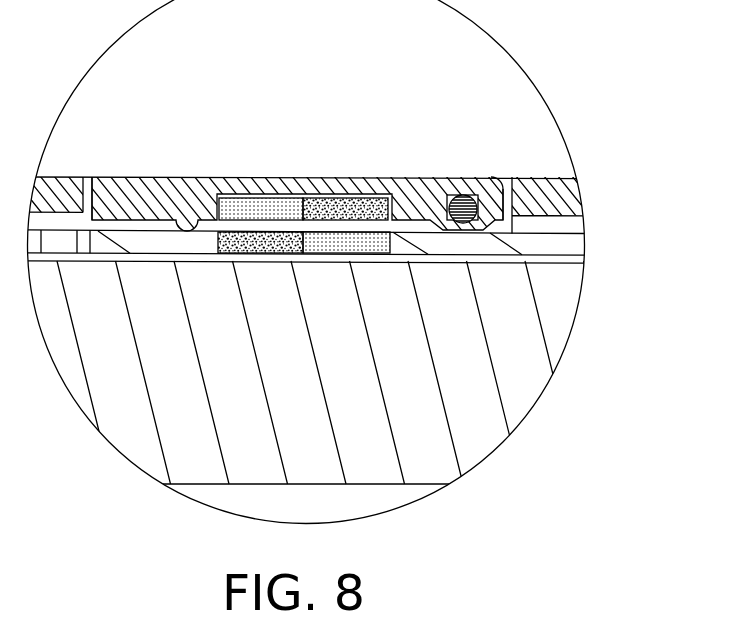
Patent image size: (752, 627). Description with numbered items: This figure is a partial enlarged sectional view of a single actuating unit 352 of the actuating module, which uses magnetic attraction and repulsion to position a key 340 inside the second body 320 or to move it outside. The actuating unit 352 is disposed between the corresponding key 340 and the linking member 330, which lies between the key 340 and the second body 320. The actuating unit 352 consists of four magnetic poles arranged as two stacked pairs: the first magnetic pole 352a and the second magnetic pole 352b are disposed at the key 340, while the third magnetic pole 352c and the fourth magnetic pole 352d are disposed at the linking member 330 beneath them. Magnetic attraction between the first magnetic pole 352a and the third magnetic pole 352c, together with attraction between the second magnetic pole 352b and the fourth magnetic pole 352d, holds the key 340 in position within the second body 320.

The key 340 is at (417, 193).
The linking member 330 is at (567, 246).
The actuating unit 352 is at (469, 311).
The first magnetic pole 352a is at (484, 258).
The second magnetic pole 352b is at (442, 293).
The third magnetic pole 352c is at (484, 293).
The fourth magnetic pole 352d is at (668, 292).
The second body 320 is at (437, 437).